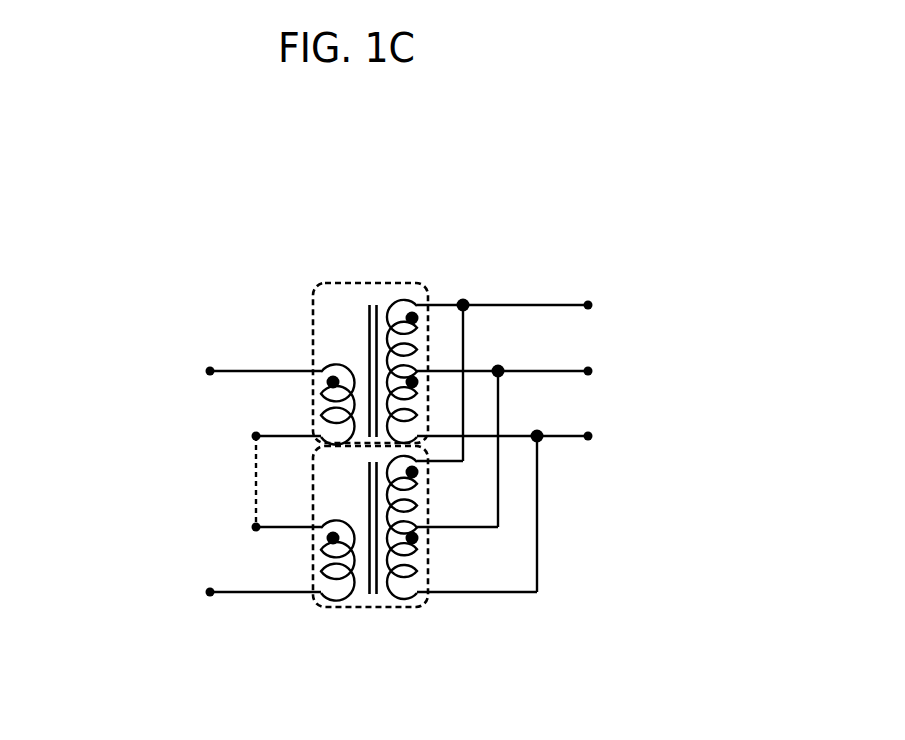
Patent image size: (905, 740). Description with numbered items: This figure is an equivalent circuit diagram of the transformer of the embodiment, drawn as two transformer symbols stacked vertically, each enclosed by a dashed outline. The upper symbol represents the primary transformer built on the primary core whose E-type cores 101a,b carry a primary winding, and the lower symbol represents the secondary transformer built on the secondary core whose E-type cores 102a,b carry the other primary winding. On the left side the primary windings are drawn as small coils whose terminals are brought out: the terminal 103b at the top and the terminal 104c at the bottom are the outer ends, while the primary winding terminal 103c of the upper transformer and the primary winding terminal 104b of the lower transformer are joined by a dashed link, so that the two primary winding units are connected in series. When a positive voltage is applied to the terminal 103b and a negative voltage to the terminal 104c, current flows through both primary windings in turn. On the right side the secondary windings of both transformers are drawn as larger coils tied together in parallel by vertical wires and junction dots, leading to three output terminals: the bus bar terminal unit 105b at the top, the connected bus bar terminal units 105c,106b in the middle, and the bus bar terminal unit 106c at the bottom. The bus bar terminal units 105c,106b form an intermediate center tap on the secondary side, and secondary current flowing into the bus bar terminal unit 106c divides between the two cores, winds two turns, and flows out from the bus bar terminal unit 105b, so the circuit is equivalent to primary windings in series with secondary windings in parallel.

The cores of primary core 101a,b is at (373, 283).
The cores of secondary core 102a,b is at (370, 612).
The terminal 103b is at (205, 369).
The primary winding terminal 103c is at (242, 434).
The primary winding terminal 104b is at (245, 524).
The terminal 104c is at (200, 588).
The bus bar terminal unit 105b is at (594, 298).
The bus bar terminal units 105c,106b is at (595, 370).
The bus bar terminal unit 106c is at (595, 437).